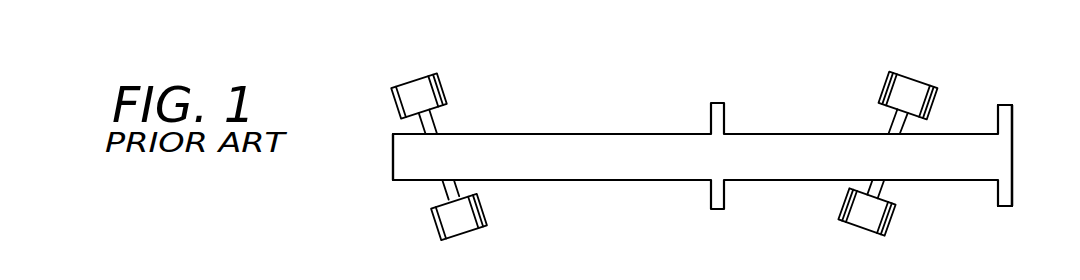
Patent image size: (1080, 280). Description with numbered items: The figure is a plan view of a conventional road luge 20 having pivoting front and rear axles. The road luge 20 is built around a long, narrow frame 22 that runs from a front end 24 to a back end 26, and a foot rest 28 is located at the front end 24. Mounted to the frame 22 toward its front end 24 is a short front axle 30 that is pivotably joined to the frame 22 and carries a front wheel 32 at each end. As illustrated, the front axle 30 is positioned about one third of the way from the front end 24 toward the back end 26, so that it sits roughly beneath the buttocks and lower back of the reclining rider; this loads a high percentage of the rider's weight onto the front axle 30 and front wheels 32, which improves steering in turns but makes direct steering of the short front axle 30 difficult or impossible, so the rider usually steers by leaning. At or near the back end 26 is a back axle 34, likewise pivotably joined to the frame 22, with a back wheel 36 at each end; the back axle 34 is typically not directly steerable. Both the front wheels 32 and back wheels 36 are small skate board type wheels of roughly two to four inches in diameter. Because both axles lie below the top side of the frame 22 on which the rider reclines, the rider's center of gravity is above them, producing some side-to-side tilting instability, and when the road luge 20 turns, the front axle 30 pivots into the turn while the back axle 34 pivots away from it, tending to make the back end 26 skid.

The road luge 20 is at (478, 64).
The frame 22 is at (632, 146).
The front end 24 is at (1005, 158).
The back end 26 is at (395, 157).
The foot rest 28 is at (998, 121).
The front axle 30 is at (891, 122).
The front wheel 32 is at (903, 71).
The back axle 34 is at (435, 121).
The back wheel 36 is at (398, 87).